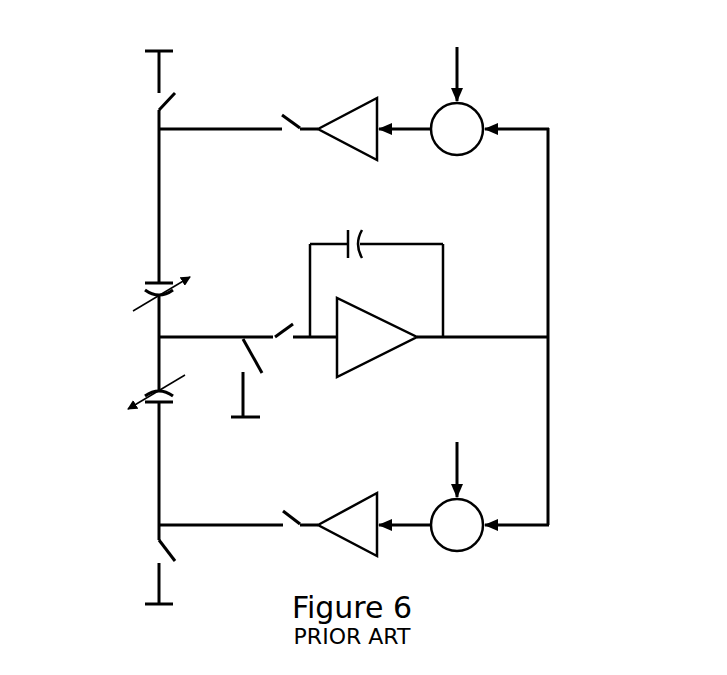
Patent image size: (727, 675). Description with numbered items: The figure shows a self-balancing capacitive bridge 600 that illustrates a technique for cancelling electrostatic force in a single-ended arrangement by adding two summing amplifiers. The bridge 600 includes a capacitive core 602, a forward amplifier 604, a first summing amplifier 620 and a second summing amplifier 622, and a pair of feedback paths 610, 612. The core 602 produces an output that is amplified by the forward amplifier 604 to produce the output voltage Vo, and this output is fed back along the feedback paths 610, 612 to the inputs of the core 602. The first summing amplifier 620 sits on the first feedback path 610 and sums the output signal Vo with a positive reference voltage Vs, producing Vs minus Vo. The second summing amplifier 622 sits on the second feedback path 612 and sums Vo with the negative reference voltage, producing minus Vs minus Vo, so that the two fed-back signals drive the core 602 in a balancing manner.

The self-balancing capacitive bridge 600 is at (612, 133).
The capacitive core 602 is at (90, 292).
The forward amplifier 604 is at (405, 362).
The first feedback path 610 is at (548, 201).
The second feedback path 612 is at (548, 378).
The first summing amplifier 620 is at (468, 103).
The second summing amplifier 622 is at (475, 547).